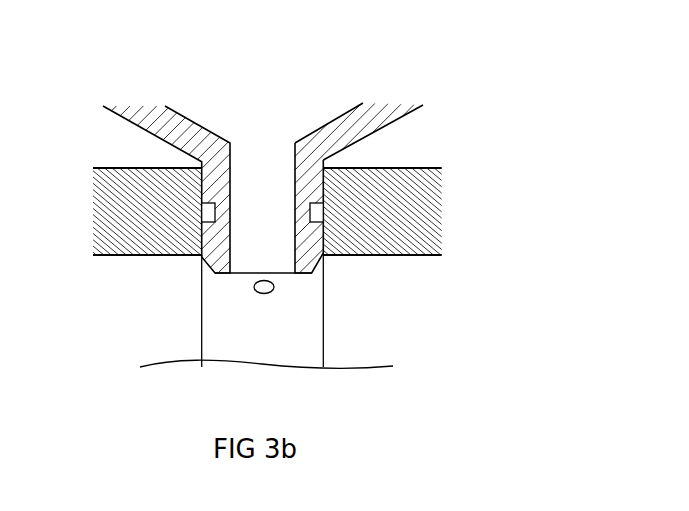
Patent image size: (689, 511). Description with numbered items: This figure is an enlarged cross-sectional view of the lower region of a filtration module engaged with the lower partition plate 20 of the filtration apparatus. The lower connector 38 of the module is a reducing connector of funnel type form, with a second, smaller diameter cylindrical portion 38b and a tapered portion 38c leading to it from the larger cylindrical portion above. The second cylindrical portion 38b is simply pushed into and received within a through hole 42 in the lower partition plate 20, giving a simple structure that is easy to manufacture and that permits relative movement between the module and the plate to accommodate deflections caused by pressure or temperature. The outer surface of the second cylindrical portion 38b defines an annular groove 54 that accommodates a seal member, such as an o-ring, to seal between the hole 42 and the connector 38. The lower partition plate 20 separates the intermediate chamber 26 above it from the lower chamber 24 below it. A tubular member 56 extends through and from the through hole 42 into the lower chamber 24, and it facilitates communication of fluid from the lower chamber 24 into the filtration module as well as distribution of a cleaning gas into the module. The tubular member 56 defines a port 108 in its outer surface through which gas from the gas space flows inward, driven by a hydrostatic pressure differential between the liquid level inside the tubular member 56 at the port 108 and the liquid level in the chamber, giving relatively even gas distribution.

The lower connector 38 is at (244, 158).
The second cylindrical portion 38b is at (305, 160).
The tapered portion 38c is at (348, 130).
The lower partition plate 20 is at (109, 178).
The intermediate chamber 26 is at (382, 194).
The lower chamber 24 is at (259, 311).
The through hole 42 is at (201, 240).
The annular groove 54 is at (323, 213).
The tubular member 56 is at (323, 345).
The port 108 is at (264, 293).